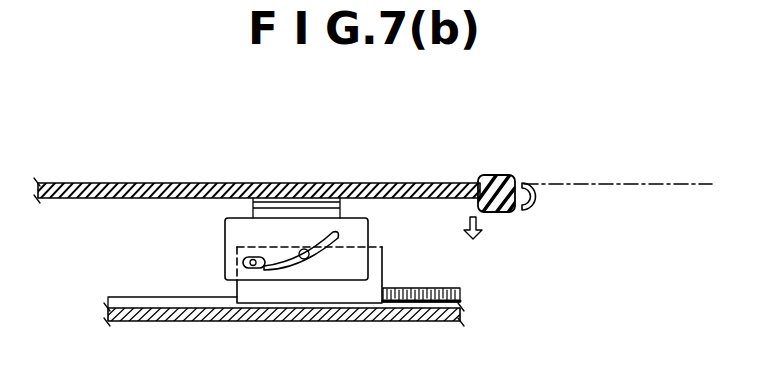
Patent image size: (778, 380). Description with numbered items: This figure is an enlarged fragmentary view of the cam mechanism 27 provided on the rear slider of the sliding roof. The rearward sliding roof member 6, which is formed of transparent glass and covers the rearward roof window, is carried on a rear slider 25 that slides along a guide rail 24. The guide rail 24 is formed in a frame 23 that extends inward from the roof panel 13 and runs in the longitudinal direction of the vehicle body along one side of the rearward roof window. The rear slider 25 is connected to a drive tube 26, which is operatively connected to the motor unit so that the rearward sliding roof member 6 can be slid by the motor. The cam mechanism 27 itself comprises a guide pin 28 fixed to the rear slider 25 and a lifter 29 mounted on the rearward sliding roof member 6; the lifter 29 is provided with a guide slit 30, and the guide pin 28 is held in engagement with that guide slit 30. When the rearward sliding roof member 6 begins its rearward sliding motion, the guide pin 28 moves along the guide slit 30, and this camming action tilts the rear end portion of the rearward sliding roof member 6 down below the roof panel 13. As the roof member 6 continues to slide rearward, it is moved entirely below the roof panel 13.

The rearward sliding roof member 6 is at (440, 186).
The roof panel 13 is at (595, 182).
The frame 23 is at (187, 310).
The guide rail 24 is at (130, 298).
The rear slider 25 is at (382, 270).
The drive tube 26 is at (432, 288).
The cam mechanism 27 is at (213, 228).
The guide pin 28 is at (272, 267).
The lifter 29 is at (363, 228).
The guide slit 30 is at (308, 248).